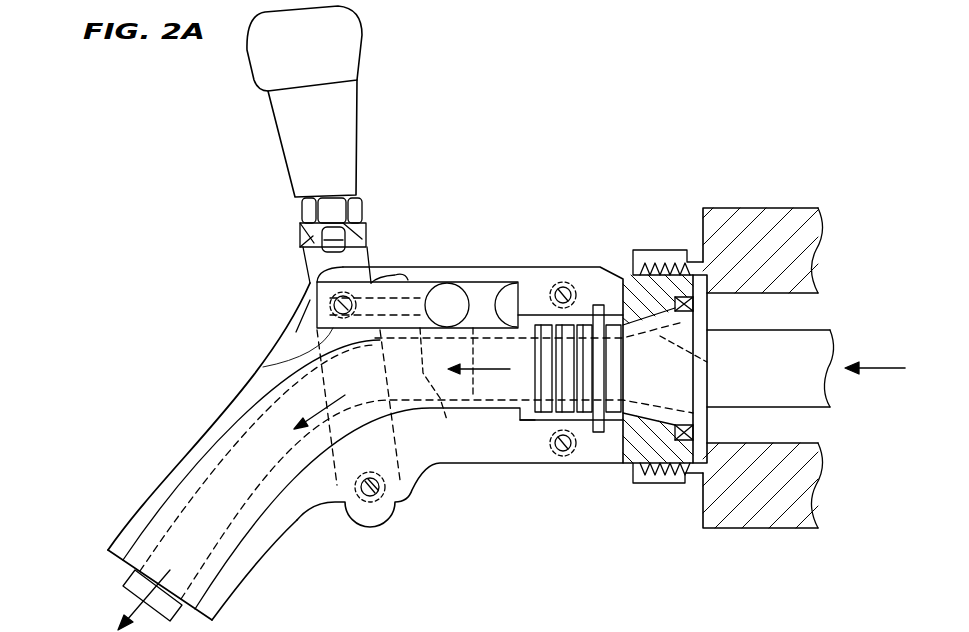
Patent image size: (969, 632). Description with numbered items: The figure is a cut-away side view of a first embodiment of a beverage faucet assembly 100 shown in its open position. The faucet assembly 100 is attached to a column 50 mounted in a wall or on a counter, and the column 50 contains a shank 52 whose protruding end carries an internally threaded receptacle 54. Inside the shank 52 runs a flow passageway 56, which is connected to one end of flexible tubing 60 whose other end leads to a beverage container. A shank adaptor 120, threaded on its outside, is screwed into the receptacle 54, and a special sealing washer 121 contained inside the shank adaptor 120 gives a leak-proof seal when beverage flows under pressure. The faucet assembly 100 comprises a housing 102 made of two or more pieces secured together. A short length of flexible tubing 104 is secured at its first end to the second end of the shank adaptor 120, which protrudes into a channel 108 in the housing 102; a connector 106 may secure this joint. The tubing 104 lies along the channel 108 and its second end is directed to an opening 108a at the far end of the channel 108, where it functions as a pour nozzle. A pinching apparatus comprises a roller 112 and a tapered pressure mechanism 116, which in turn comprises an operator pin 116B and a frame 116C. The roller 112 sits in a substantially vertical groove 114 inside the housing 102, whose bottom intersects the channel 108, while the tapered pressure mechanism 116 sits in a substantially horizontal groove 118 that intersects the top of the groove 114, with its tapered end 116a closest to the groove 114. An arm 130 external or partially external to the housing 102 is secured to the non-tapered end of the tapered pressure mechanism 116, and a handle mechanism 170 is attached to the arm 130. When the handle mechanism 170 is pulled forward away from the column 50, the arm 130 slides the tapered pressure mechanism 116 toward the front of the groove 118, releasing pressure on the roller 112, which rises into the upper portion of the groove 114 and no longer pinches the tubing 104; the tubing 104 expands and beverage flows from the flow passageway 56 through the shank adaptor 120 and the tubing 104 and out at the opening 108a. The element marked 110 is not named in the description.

The column 50 is at (767, 213).
The shank 52 is at (697, 262).
The receptacle 54 is at (657, 249).
The flow passageway 56 is at (751, 440).
The flexible tubing 60 is at (834, 348).
The faucet assembly 100 is at (196, 152).
The housing 102 is at (535, 463).
The short length of flexible tubing 104 is at (133, 585).
The connector 106 is at (531, 430).
The channel 108 is at (270, 503).
The opening 108a is at (117, 563).
The valve member 110 is at (706, 361).
The roller 112 is at (494, 288).
The groove 114 is at (443, 402).
The tapered pressure mechanism 116 is at (313, 290).
The tapered end 116a is at (450, 287).
The operator pin 116B is at (263, 367).
The frame 116C is at (296, 332).
The groove 118 is at (400, 279).
The shank adaptor 120 is at (633, 468).
The sealing washer 121 is at (685, 418).
The arm 130 is at (303, 266).
The handle mechanism 170 is at (355, 32).